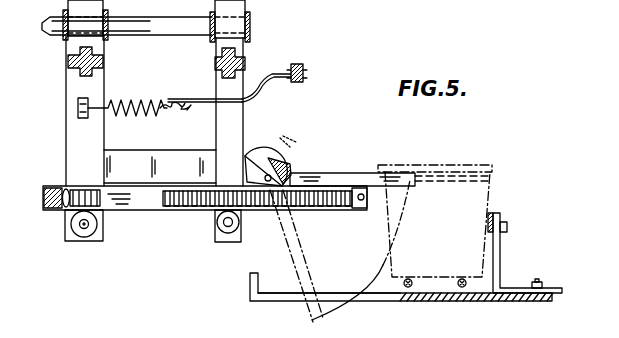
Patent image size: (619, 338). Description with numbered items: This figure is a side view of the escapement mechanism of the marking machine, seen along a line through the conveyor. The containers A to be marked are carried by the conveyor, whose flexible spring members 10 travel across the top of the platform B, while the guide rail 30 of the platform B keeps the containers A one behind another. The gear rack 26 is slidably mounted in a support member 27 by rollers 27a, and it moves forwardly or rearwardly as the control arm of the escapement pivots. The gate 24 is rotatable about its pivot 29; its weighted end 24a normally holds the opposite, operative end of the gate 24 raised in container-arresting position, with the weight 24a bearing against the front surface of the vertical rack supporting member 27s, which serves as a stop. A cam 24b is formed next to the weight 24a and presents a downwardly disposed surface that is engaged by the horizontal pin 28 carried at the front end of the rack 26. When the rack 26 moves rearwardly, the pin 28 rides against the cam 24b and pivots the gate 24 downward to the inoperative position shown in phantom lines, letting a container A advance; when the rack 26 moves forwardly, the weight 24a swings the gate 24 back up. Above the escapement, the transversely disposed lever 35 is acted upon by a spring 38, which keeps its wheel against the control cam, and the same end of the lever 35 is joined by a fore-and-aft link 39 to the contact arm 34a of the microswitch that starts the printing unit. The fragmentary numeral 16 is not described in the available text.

The flexible spring members 10 is at (465, 288).
The housing 16 is at (406, 7).
The gate 24 is at (344, 173).
The weighted end 24a is at (247, 153).
The cam 24b is at (289, 165).
The gear rack 26 is at (308, 210).
The support member 27 is at (125, 172).
The rollers 27a is at (100, 197).
The vertical rack supporting member 27s is at (118, 125).
The horizontal pin 28 is at (364, 200).
The pivot 29 is at (281, 153).
The guide rail 30 is at (497, 213).
The contact arm 34a is at (299, 64).
The lever 35 is at (230, 140).
The spring 38 is at (132, 100).
The fore-and-aft link 39 is at (262, 70).
The containers A is at (490, 194).
The platform B is at (301, 304).